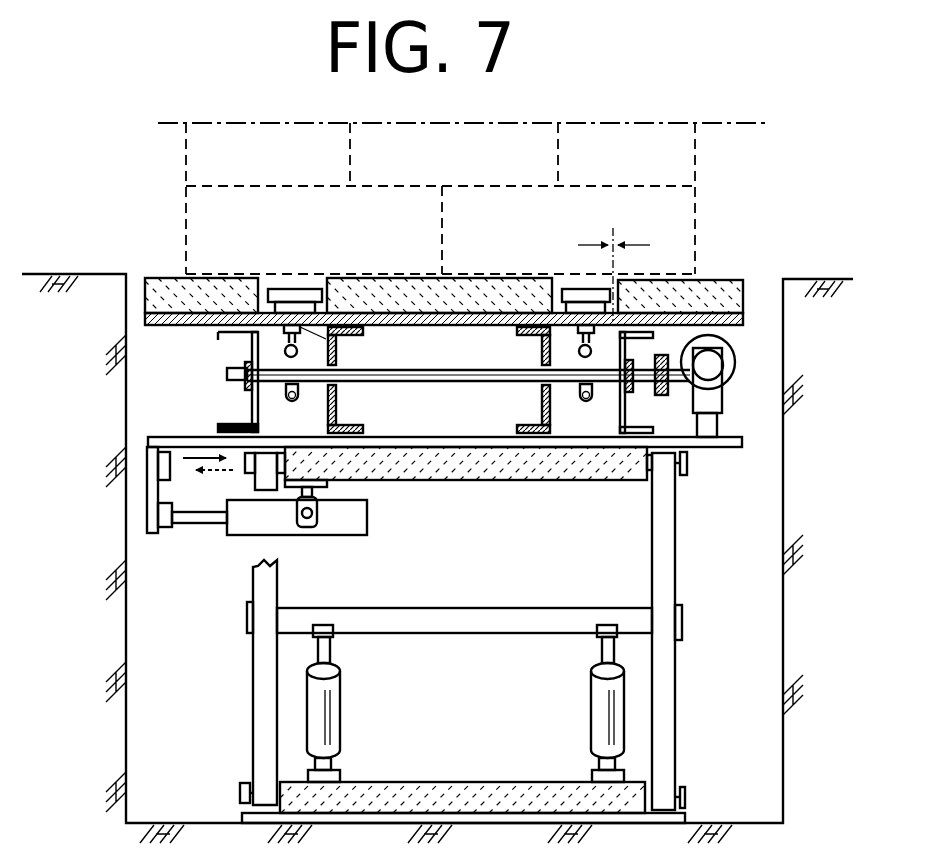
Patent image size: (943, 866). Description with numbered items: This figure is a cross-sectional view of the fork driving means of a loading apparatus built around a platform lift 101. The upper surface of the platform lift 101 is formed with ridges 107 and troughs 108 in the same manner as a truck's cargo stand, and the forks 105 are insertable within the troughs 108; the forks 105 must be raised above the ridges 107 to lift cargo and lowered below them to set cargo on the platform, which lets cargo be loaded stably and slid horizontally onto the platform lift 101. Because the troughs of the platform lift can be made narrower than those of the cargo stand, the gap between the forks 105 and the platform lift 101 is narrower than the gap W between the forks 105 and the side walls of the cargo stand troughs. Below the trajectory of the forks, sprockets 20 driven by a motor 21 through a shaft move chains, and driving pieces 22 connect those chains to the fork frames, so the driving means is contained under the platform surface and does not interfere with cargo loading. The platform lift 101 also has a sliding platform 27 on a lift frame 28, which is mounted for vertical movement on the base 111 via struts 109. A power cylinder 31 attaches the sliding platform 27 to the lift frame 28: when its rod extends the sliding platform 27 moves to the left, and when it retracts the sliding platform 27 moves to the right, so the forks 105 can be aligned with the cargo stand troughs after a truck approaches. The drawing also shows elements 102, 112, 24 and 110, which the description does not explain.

The platform lift 101 is at (157, 332).
The fixed floor slab 102 is at (731, 274).
The forks 105 is at (312, 262).
The ridges 107 is at (407, 280).
The troughs 108 is at (323, 302).
The gap edge member 112 is at (617, 300).
The gap W is at (618, 236).
The sprockets 20 is at (286, 356).
The motor 21 is at (722, 374).
The driving pieces 22 is at (545, 352).
The support column 24 is at (333, 350).
The sliding platform 27 is at (453, 436).
The lift frame 28 is at (566, 480).
The power cylinder 31 is at (366, 527).
The struts 109 is at (262, 720).
The lift cylinders 110 is at (336, 722).
The base 111 is at (468, 795).